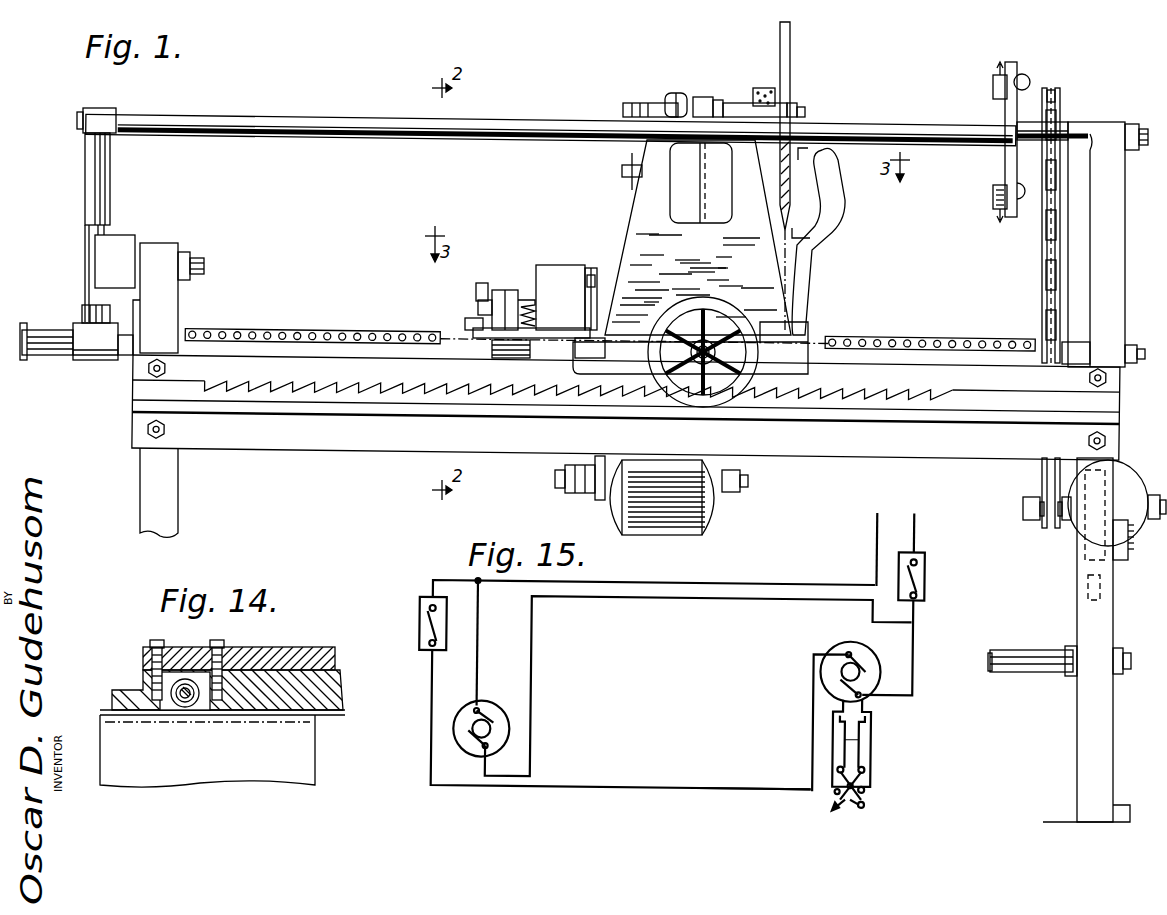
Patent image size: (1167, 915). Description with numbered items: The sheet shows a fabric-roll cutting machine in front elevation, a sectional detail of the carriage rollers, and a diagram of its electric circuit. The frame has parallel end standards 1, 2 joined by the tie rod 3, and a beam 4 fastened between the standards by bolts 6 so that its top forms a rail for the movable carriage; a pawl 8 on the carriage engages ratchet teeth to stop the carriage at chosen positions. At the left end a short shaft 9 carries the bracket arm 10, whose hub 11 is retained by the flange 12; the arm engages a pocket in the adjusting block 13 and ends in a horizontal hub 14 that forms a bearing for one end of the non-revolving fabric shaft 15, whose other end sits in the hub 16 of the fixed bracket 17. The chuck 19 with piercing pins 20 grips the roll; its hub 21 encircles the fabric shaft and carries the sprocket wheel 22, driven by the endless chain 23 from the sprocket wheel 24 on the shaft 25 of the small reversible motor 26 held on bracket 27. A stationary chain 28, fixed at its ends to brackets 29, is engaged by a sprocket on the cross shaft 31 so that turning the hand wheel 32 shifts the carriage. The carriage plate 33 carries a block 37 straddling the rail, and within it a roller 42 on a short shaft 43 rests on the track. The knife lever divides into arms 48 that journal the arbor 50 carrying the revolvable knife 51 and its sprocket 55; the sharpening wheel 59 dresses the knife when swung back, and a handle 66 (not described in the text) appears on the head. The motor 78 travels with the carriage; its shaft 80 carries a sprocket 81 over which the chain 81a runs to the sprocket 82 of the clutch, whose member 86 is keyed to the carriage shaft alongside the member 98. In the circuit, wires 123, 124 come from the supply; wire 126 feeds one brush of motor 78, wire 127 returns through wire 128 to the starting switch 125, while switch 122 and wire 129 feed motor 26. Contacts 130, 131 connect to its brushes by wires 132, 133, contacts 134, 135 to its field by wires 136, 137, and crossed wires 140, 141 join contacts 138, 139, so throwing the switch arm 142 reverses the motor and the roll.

In FIG. 1, the end standard 1 is at (1086, 640).
In FIG. 1, the end standard 2 is at (159, 492).
In FIG. 1, the tie rod 3 is at (1022, 650).
In FIG. 1, the beam 4 is at (626, 407).
In FIG. 1, the bolt 6 is at (1088, 429).
In FIG. 1, the pawl 8 is at (640, 371).
In FIG. 1, the short shaft 9 is at (46, 357).
In FIG. 1, the bracket arm 10 is at (84, 244).
In FIG. 1, the hub 11 is at (85, 360).
In FIG. 1, the flange 12 is at (22, 356).
In FIG. 1, the adjusting block 13 is at (115, 256).
In FIG. 1, the horizontal hub 14 is at (102, 115).
In FIG. 14, the horizontal hub 14 is at (220, 751).
In FIG. 1, the fabric shaft 15 is at (297, 123).
In FIG. 1, the hub 16 is at (1103, 130).
In FIG. 1, the fixed bracket 17 is at (1129, 285).
In FIG. 1, the chuck 19 is at (1012, 63).
In FIG. 1, the piercing pins 20 is at (997, 97).
In FIG. 1, the hub 21 is at (1028, 118).
In FIG. 1, the sprocket wheel 22 is at (1050, 90).
In FIG. 1, the endless chain 23 is at (1041, 306).
In FIG. 1, the sprocket wheel 24 is at (1045, 526).
In FIG. 1, the motor shaft 25 is at (1158, 522).
In FIG. 1, the motor 26 is at (1072, 527).
In FIG. 1, the bracket 27 is at (1122, 572).
In FIG. 1, the chain 28 is at (322, 320).
In FIG. 1, the bracket 29 is at (1078, 342).
In FIG. 1, the cross shaft 31 is at (708, 350).
In FIG. 1, the hand wheel 32 is at (686, 312).
In FIG. 14, the carriage plate 33 is at (282, 656).
In FIG. 14, the block 37 is at (343, 700).
In FIG. 14, the roller 42 is at (210, 702).
In FIG. 14, the short shaft 43 is at (183, 700).
In FIG. 1, the arm 48 is at (698, 237).
In FIG. 1, the arbor 50 is at (688, 104).
In FIG. 1, the revolvable knife 51 is at (791, 72).
In FIG. 1, the sprocket 55 is at (708, 100).
In FIG. 1, the sharpening wheel 59 is at (764, 90).
In FIG. 1, the lever 66 is at (834, 210).
In FIG. 1, the motor 78 is at (662, 494).
In FIG. 15, the motor 78 is at (492, 708).
In FIG. 1, the motor shaft 80 is at (742, 482).
In FIG. 1, the sprocket 81 is at (588, 496).
In FIG. 1, the coupling disc 81a is at (556, 478).
In FIG. 1, the sprocket 82 is at (592, 272).
In FIG. 1, the clutch member 86 is at (539, 311).
In FIG. 1, the member 98 is at (503, 292).
In FIG. 15, the switch 122 is at (428, 622).
In FIG. 15, the wire 123 is at (873, 546).
In FIG. 15, the wire 124 is at (913, 538).
In FIG. 15, the switch 125 is at (917, 590).
In FIG. 15, the wire 126 is at (852, 648).
In FIG. 15, the wire 127 is at (534, 758).
In FIG. 15, the wire 128 is at (915, 656).
In FIG. 15, the wire 129 is at (430, 750).
In FIG. 15, the contact 130 is at (868, 790).
In FIG. 15, the contact 131 is at (832, 795).
In FIG. 15, the wire 132 is at (875, 762).
In FIG. 15, the wire 133 is at (833, 750).
In FIG. 15, the contact 134 is at (866, 752).
In FIG. 15, the contact 135 is at (837, 770).
In FIG. 15, the wire 136 is at (868, 714).
In FIG. 15, the wire 137 is at (833, 730).
In FIG. 15, the contact 138 is at (866, 805).
In FIG. 15, the contact 139 is at (851, 808).
In FIG. 15, the crossed wire 140 is at (790, 782).
In FIG. 15, the crossed wire 141 is at (870, 773).
In FIG. 15, the switch arm 142 is at (830, 811).